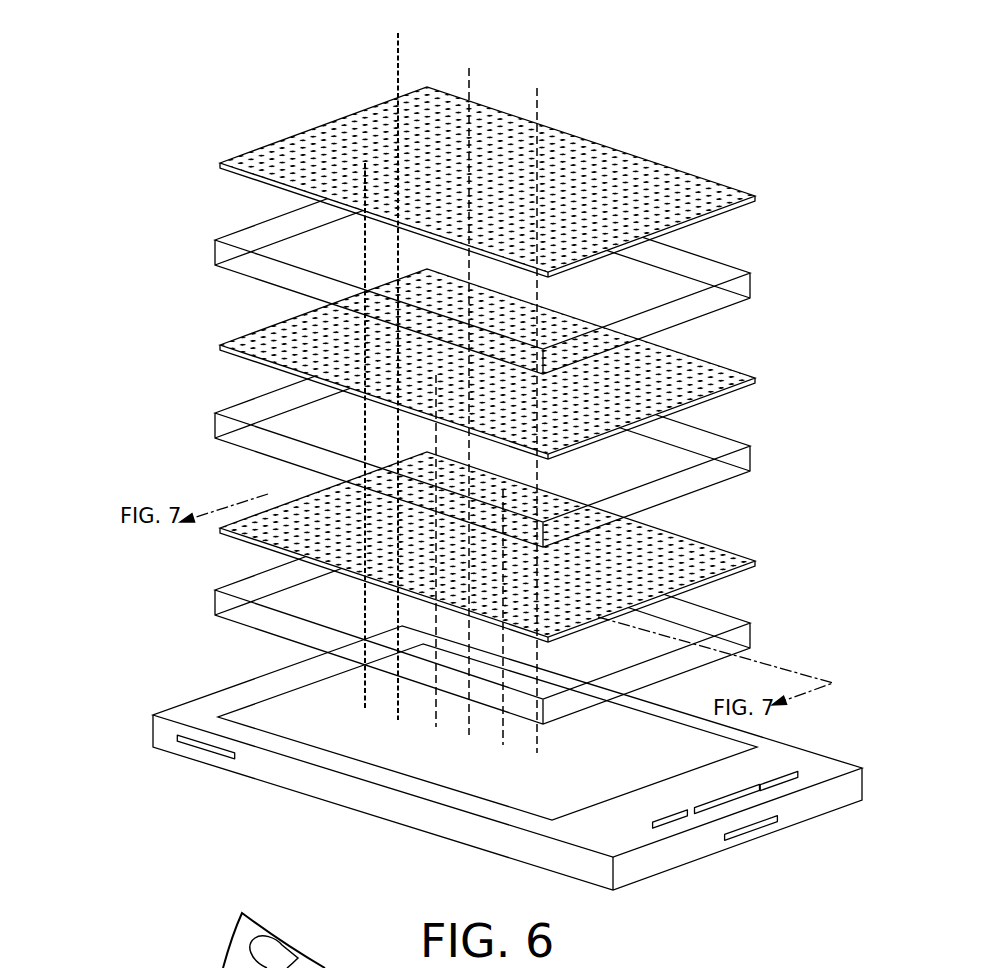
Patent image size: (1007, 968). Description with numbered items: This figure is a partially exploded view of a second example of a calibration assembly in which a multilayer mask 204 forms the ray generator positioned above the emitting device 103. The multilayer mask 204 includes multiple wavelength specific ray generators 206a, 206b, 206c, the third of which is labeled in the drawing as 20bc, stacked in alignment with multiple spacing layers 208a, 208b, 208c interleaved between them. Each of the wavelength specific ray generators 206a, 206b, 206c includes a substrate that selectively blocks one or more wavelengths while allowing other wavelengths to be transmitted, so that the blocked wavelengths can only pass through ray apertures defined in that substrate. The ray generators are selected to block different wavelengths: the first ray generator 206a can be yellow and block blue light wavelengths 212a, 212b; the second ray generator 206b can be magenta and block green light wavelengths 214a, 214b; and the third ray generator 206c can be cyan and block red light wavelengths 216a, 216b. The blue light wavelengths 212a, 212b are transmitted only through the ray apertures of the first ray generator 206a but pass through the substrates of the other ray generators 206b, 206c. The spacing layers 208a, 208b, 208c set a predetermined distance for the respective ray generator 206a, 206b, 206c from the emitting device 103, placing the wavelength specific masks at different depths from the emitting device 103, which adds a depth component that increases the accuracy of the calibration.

The emitting device 103 is at (388, 815).
The multilayer mask 204 is at (130, 210).
The first ray generator 206a is at (593, 148).
The second ray generator 206b is at (707, 371).
The third ray generator 206c is at (516, 547).
The third perforated layer (as labeled) 20bc is at (717, 551).
The spacing layer 208a is at (700, 268).
The spacing layer 208b is at (722, 447).
The spacing layer 208c is at (756, 633).
The blue light wavelength 212a is at (417, 26).
The blue light wavelength 212b is at (363, 163).
The green light wavelength 214a is at (469, 70).
The green light wavelength 214b is at (436, 725).
The red light wavelength 216a is at (537, 90).
The red light wavelength 216b is at (503, 732).